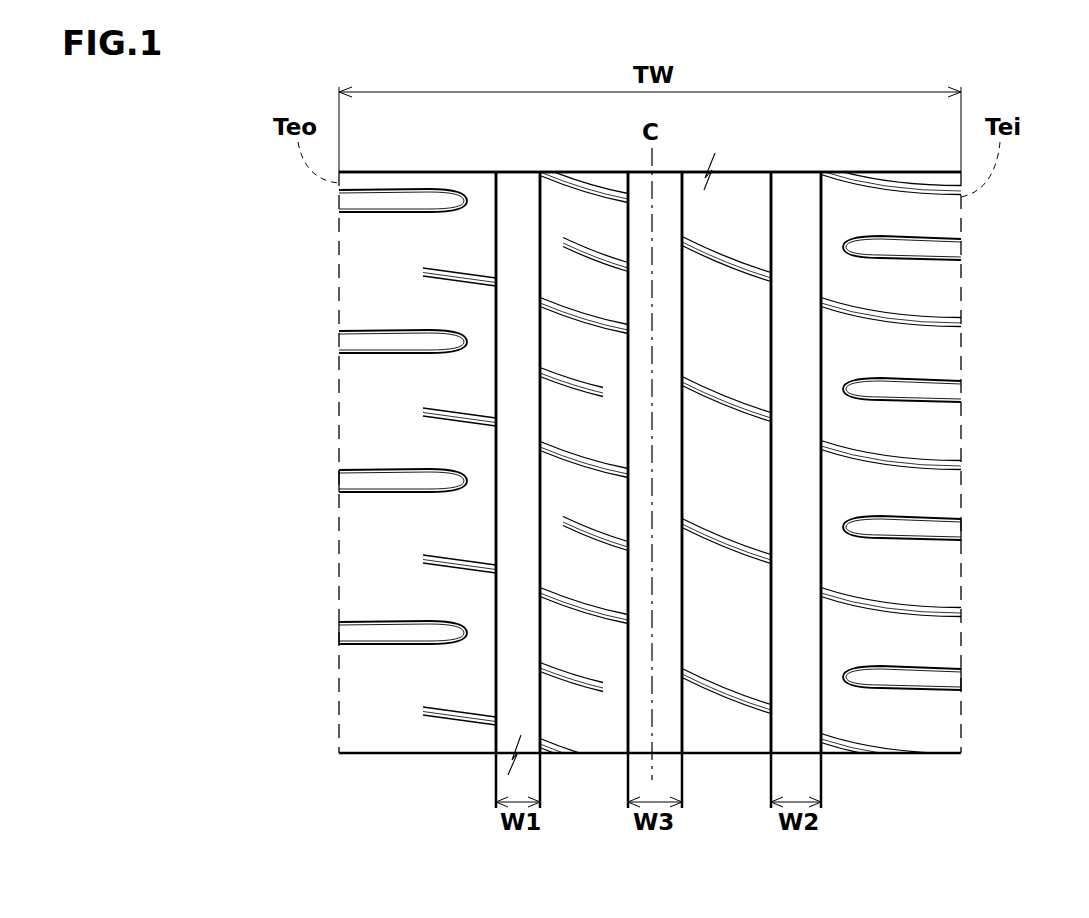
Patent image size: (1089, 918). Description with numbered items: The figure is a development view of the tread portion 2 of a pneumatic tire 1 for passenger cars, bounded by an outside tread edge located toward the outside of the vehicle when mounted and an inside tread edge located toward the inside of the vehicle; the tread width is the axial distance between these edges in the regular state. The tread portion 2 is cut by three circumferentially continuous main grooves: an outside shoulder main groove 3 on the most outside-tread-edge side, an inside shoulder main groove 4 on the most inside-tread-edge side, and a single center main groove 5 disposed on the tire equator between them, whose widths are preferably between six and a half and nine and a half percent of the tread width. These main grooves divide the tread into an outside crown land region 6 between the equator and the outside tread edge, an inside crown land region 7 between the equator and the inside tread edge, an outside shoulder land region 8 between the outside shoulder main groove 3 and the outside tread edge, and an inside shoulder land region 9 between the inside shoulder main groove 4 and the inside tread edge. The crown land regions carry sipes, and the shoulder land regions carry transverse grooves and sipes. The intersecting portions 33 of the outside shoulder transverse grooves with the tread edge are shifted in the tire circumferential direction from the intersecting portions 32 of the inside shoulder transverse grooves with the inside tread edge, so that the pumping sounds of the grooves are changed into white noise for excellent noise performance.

The tire 1 is at (833, 170).
The tread portion 2 is at (617, 170).
The outside shoulder main groove 3 is at (520, 215).
The inside shoulder main groove 4 is at (797, 213).
The center main groove 5 is at (665, 228).
The outside crown land region 6 is at (575, 212).
The inside crown land region 7 is at (730, 207).
The outside shoulder land region 8 is at (422, 237).
The inside shoulder land region 9 is at (903, 217).
The intersecting portion 32 is at (963, 530).
The intersecting portion 33 is at (337, 480).